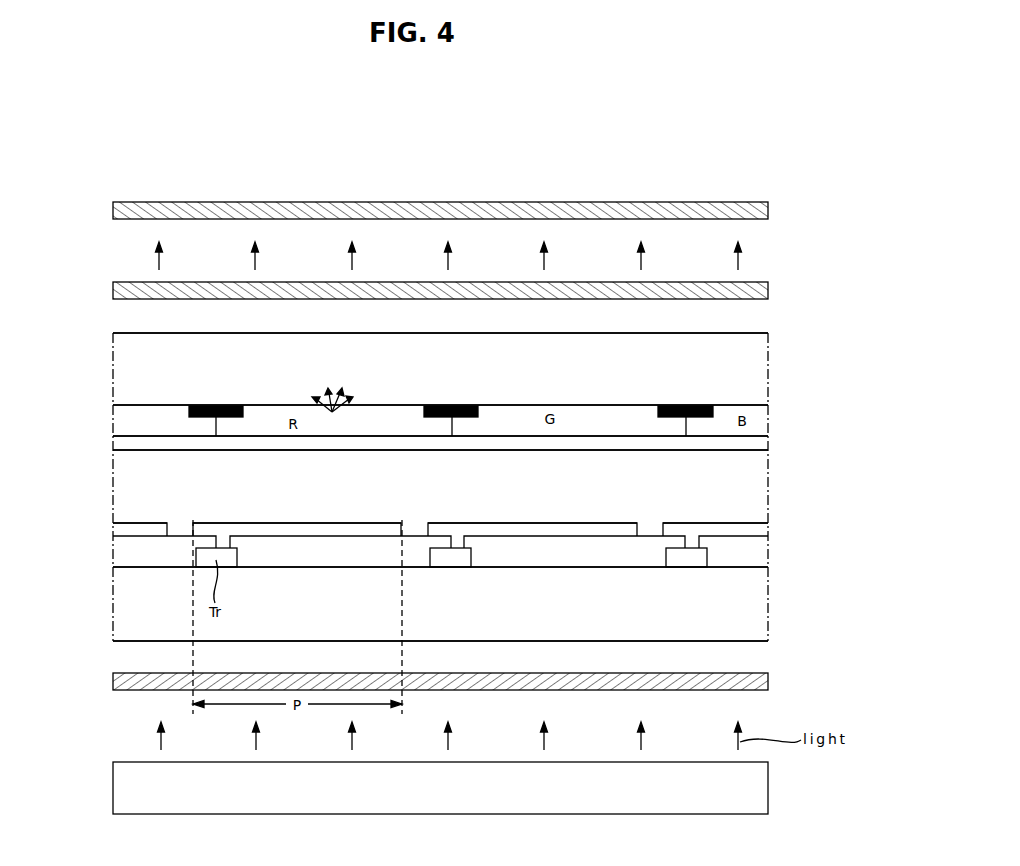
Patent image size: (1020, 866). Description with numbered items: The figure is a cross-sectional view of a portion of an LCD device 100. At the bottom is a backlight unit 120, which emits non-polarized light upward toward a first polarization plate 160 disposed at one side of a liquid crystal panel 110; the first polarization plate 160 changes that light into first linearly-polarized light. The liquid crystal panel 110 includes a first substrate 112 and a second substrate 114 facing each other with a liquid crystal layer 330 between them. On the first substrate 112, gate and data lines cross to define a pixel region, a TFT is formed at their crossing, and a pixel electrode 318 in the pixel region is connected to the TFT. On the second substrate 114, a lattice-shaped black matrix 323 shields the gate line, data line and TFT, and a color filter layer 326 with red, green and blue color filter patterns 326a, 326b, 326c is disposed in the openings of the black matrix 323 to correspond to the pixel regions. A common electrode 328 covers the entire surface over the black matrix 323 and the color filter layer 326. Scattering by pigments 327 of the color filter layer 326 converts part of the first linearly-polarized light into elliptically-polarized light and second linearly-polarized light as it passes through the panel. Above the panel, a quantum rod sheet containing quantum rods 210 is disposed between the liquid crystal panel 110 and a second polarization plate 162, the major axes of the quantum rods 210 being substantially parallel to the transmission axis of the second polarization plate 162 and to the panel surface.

The LCD device 100 is at (719, 137).
The liquid crystal panel 110 is at (112, 333).
The first substrate 112 is at (755, 618).
The second substrate 114 is at (757, 371).
The backlight unit 120 is at (757, 791).
The first polarization plate 160 is at (677, 682).
The second polarization plate 162 is at (613, 212).
The quantum rods 210 is at (508, 282).
The pixel electrode 318 is at (308, 528).
The black matrix 323 is at (217, 405).
The color filter layer 326 is at (727, 415).
The red color filter pattern 326a is at (308, 384).
The green color filter pattern 326b is at (510, 418).
The blue color filter pattern 326c is at (661, 385).
The pigments 327 is at (332, 413).
The common electrode 328 is at (753, 442).
The liquid crystal layer 330 is at (753, 487).